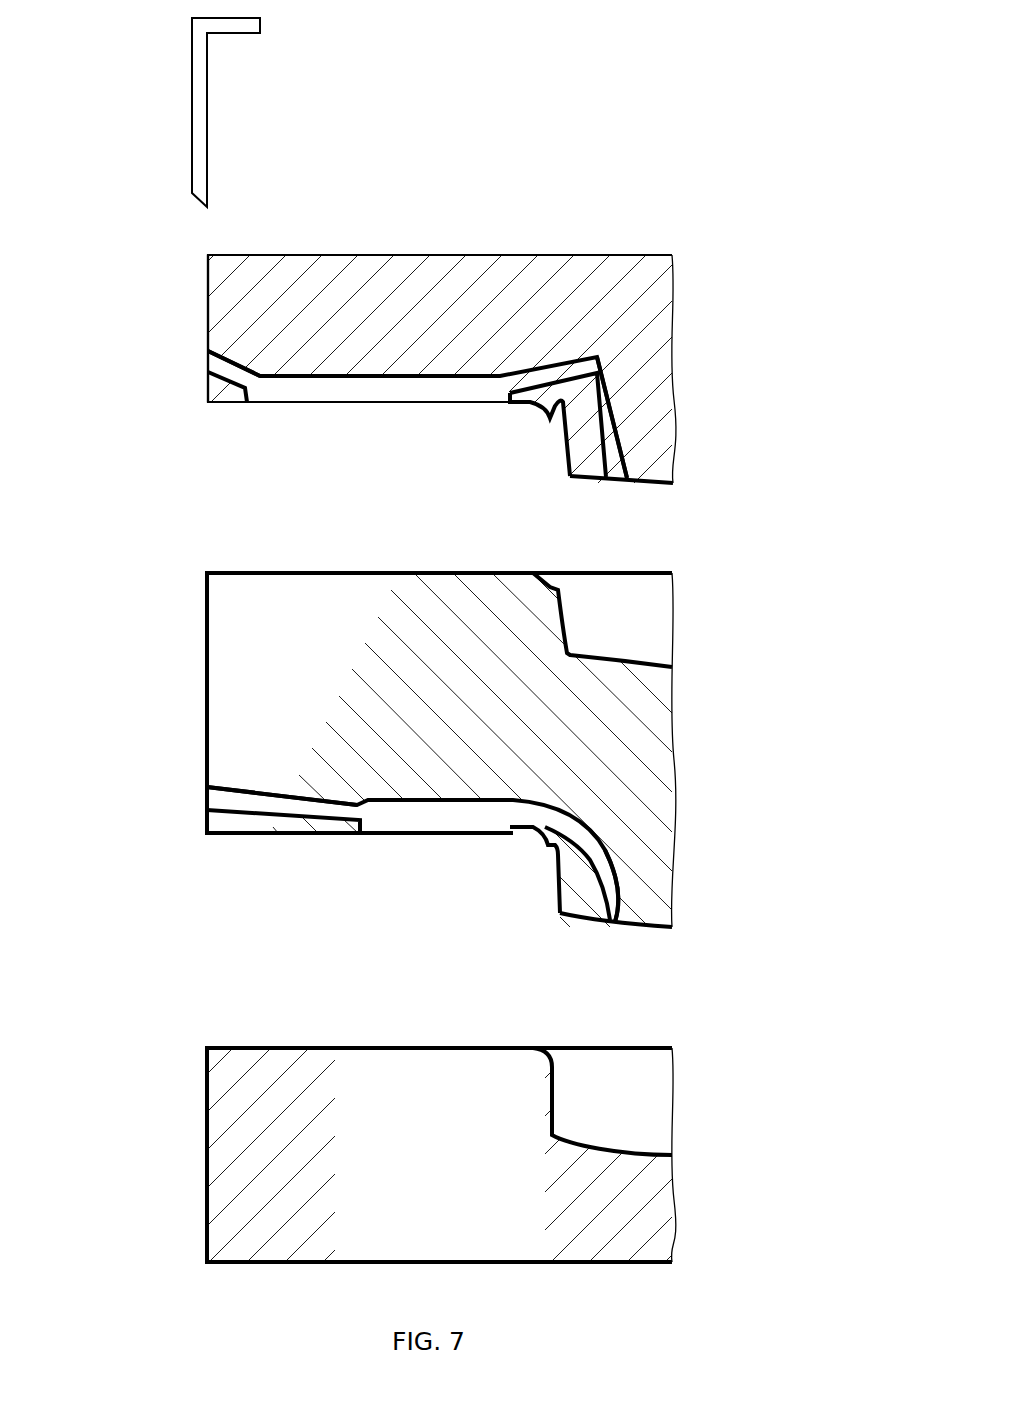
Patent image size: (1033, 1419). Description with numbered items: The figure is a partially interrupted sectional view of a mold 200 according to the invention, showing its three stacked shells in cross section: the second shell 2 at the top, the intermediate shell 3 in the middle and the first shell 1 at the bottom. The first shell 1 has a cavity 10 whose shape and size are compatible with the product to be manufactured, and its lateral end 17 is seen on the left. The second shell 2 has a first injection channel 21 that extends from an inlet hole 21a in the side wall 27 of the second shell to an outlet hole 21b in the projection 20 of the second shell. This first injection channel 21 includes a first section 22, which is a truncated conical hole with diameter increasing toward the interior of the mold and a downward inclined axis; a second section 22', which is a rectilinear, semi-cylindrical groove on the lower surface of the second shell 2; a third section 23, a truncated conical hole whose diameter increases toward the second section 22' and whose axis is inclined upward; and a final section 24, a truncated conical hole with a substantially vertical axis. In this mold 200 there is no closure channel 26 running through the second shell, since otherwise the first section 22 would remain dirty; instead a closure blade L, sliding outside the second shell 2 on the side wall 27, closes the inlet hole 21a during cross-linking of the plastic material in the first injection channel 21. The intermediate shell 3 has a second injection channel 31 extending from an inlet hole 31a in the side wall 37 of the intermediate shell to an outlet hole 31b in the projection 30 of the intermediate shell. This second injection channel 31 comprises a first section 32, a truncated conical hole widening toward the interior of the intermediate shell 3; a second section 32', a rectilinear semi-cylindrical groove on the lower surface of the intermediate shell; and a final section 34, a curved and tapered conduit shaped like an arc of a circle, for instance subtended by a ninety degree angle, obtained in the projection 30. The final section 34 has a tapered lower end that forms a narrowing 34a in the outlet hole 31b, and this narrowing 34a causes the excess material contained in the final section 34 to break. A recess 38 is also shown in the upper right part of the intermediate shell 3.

The closure blade L is at (197, 104).
The mold 200 is at (729, 178).
The second shell 2 is at (597, 277).
The projection 20 is at (650, 457).
The first injection channel 21 is at (388, 362).
The inlet hole 21a is at (208, 360).
The outlet hole 21b is at (615, 480).
The first section 22 is at (183, 411).
The second section 22' is at (366, 426).
The third section 23 is at (540, 362).
The final section 24 is at (607, 420).
The closure channel 26 is at (255, 298).
The side wall 27 is at (207, 282).
The intermediate shell 3 is at (247, 715).
The projection 30 is at (640, 877).
The second injection channel 31 is at (409, 776).
The inlet hole 31a is at (207, 795).
The outlet hole 31b is at (613, 927).
The first section 32 is at (276, 862).
The second section 32' is at (422, 855).
The final section 34 is at (580, 843).
The narrowing 34a is at (613, 898).
The side wall 37 is at (207, 632).
The recess 38 is at (643, 612).
The first shell 1 is at (242, 1225).
The cavity 10 is at (643, 1097).
The lateral end 17 is at (207, 1138).